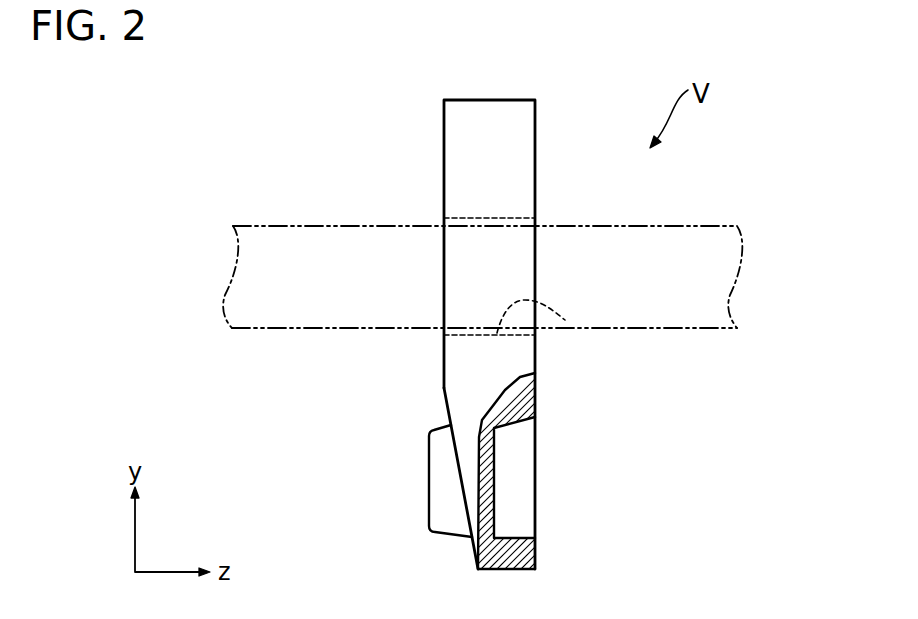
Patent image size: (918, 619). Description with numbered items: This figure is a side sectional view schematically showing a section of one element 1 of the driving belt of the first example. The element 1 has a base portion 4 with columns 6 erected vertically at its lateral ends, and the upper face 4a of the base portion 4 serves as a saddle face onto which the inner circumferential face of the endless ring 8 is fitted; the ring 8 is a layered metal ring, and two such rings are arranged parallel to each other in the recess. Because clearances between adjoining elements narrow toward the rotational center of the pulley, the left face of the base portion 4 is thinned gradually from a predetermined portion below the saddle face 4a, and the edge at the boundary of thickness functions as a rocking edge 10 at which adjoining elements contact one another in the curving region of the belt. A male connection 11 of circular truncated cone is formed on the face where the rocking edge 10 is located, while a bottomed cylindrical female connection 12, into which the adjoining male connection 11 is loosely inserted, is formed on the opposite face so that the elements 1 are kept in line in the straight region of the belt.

The element 1 is at (425, 172).
The base portion 4 is at (497, 362).
The upper face (saddle face) 4a is at (565, 320).
The column 6 is at (503, 198).
The ring 8 is at (696, 305).
The rocking edge 10 is at (444, 388).
The male connection 11 is at (442, 487).
The female connection 12 is at (525, 492).